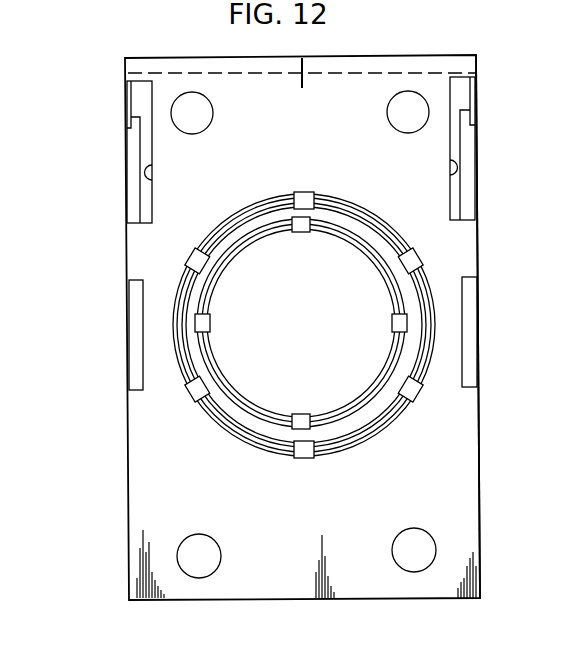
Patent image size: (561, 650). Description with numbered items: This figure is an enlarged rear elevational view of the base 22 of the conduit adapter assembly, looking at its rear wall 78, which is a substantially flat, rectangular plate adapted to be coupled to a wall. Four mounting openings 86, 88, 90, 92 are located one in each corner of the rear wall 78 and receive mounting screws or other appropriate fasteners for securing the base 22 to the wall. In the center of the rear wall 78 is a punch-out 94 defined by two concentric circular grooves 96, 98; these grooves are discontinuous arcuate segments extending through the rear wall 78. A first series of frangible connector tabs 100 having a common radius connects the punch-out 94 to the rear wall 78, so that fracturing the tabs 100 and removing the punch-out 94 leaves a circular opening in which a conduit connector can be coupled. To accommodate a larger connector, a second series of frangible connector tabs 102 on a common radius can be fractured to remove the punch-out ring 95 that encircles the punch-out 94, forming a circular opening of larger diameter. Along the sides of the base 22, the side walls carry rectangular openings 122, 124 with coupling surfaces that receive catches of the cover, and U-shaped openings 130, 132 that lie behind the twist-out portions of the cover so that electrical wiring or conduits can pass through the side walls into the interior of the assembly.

The base 22 is at (122, 493).
The rear wall 78 is at (472, 455).
The mounting opening 86 is at (425, 568).
The mounting opening 88 is at (205, 572).
The mounting opening 90 is at (408, 102).
The mounting opening 92 is at (195, 102).
The punch-out 94 is at (292, 283).
The punch-out ring 95 is at (295, 363).
The circular groove 96 is at (301, 323).
The circular groove 98 is at (346, 455).
The frangible connector tab 100 is at (300, 232).
The frangible connector tab 102 is at (192, 402).
The rectangular opening 122 is at (137, 387).
The rectangular opening 124 is at (473, 384).
The U-shaped opening 130 is at (449, 176).
The U-shaped opening 132 is at (150, 179).